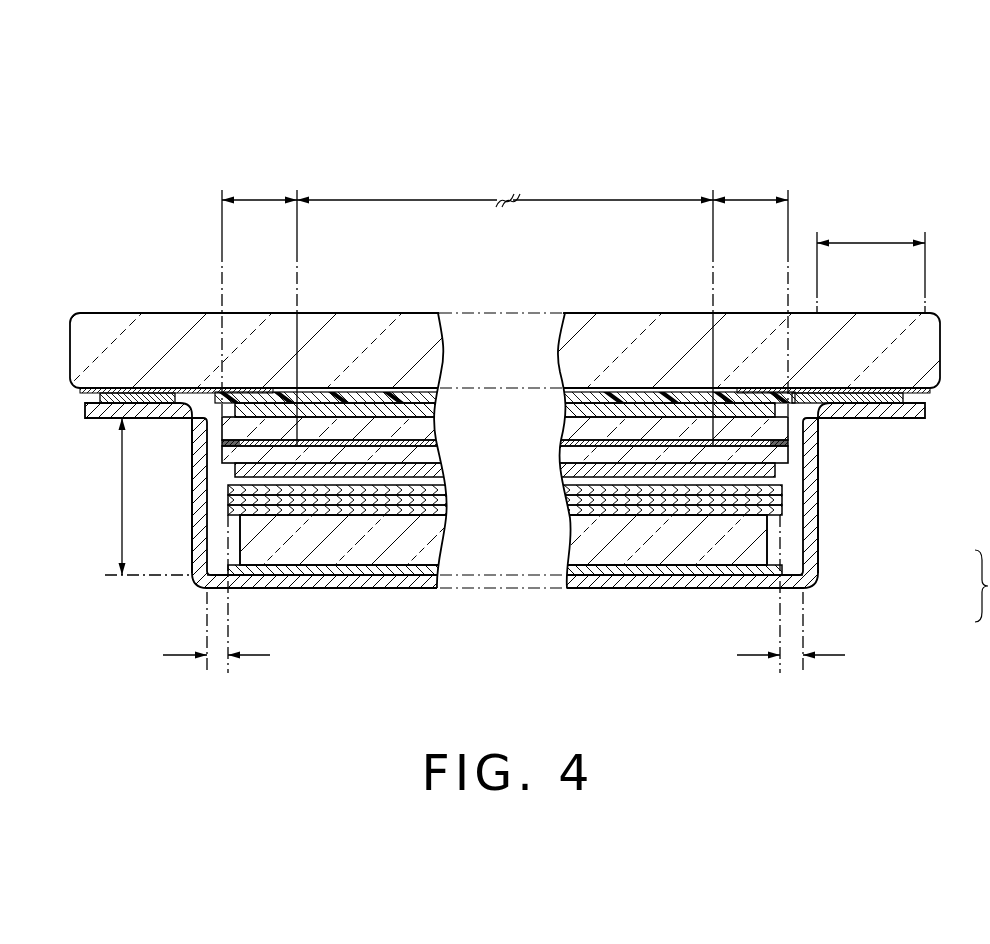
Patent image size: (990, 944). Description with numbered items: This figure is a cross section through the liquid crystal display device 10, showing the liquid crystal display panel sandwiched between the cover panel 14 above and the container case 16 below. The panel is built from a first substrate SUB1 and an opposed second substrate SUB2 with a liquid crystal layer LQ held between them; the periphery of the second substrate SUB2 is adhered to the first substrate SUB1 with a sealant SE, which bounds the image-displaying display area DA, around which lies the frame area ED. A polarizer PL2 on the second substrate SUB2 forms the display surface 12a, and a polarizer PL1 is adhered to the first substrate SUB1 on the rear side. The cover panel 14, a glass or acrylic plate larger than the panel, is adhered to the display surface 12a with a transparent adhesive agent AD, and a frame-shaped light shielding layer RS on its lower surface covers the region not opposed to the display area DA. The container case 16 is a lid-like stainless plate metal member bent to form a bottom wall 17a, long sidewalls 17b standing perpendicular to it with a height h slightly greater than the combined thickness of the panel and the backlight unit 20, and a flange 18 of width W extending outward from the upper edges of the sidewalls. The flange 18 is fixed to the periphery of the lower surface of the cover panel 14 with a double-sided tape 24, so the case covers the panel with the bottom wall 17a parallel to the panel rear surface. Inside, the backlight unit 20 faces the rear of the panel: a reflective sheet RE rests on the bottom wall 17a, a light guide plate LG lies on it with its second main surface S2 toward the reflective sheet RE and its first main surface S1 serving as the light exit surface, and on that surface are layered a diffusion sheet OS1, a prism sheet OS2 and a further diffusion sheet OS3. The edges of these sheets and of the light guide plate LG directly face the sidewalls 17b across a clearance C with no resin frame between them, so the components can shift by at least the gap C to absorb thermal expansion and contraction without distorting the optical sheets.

The display device 10 is at (806, 228).
The cover panel 14 is at (160, 318).
The double-sided tape 24 is at (104, 406).
The flange 18 is at (888, 418).
The bottom wall 17a is at (407, 590).
The long sidewalls 17b is at (193, 508).
The container case 16 is at (281, 603).
The backlight unit 20 is at (342, 556).
The display surface 12a is at (397, 417).
The light shielding layer RS is at (115, 388).
The sealant SE is at (250, 440).
The transparent adhesive agent AD is at (318, 392).
The polarizer PL2 is at (365, 408).
The polarizer PL1 is at (660, 470).
The liquid crystal layer LQ is at (632, 442).
The second substrate SUB2 is at (780, 428).
The first substrate SUB1 is at (777, 452).
The diffusion sheet OS3 is at (780, 490).
The prism sheet OS2 is at (780, 501).
The diffusion sheet OS1 is at (780, 512).
The light guide plate LG is at (577, 540).
The reflective sheet RE is at (595, 570).
The second main surface S2 is at (670, 565).
The first main surface S1 is at (717, 552).
The frame area ED is at (505, 306).
The display area DA is at (505, 187).
The width of flange W is at (871, 263).
The height of sidewalls h is at (144, 496).
The gap (clearance) C is at (504, 594).